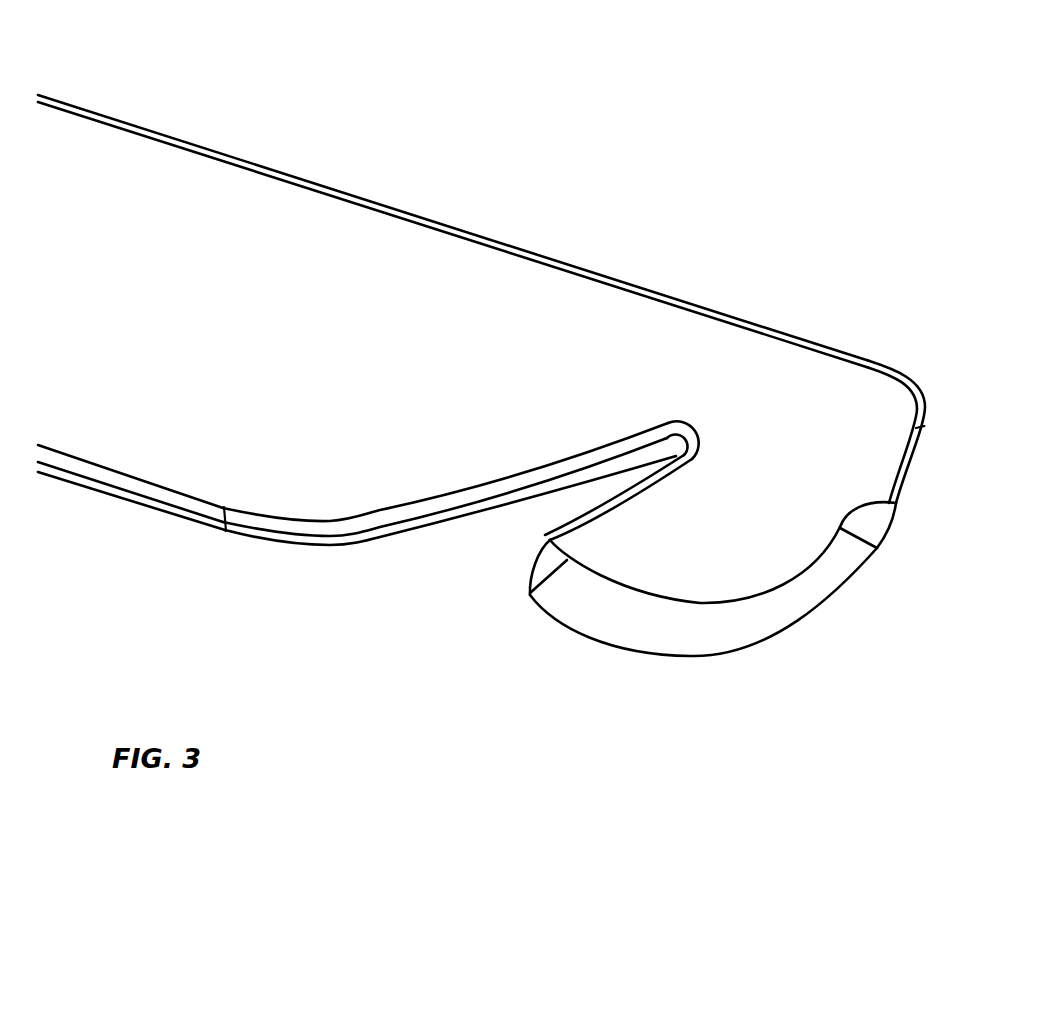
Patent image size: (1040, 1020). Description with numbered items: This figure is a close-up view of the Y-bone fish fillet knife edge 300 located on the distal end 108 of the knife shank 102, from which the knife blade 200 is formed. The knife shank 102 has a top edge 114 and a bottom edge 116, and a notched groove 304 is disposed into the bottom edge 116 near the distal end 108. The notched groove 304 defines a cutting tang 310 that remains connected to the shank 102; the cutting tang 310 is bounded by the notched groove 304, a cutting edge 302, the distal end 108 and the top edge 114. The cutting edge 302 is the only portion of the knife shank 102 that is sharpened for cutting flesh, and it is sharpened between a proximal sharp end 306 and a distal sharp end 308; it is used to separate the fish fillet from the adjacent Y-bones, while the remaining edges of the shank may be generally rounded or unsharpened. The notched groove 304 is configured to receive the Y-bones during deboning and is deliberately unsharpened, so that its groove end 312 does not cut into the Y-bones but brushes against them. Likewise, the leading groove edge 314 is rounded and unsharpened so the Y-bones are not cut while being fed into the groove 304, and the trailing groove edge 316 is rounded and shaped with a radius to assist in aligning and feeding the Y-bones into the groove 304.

The knife shank 102 is at (527, 346).
The knife blade 200 is at (527, 346).
The distal end 108 is at (906, 463).
The top edge 114 is at (510, 236).
The bottom edge 116 is at (103, 497).
The Y-bone fish fillet knife edge 300 is at (564, 594).
The cutting edge 302 is at (703, 584).
The notched groove 304 is at (532, 516).
The proximal sharp end 306 is at (529, 597).
The distal sharp end 308 is at (880, 553).
The cutting tang 310 is at (753, 536).
The groove end 312 is at (675, 434).
The leading groove edge 314 is at (523, 562).
The trailing groove edge 316 is at (320, 522).